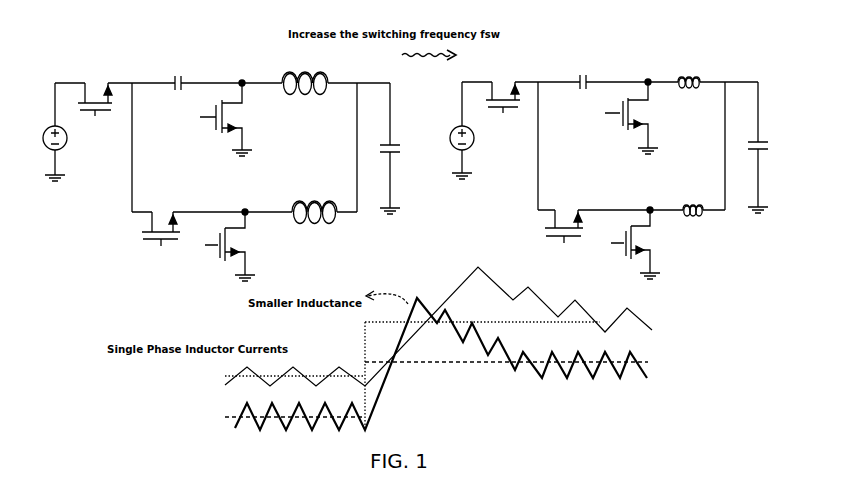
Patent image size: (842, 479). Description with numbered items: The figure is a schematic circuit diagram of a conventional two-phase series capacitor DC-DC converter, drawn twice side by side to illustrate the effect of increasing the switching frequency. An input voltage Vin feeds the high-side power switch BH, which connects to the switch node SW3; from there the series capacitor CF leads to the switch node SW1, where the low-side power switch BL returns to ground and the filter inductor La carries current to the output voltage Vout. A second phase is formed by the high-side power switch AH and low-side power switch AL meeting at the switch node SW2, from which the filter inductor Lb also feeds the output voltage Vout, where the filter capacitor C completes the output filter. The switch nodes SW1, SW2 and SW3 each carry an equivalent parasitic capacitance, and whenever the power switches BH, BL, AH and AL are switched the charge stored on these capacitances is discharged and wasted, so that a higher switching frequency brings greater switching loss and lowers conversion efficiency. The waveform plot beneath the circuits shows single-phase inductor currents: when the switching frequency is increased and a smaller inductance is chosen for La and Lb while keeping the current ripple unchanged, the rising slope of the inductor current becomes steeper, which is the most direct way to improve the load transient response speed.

The input voltage Vin is at (255, 131).
The power switch BH is at (299, 110).
The switch node SW3 is at (335, 138).
The series capacitor CF is at (380, 72).
The switch node SW1 is at (444, 75).
The power switch BL is at (420, 119).
The filter inductor La is at (491, 75).
The output voltage Vout is at (545, 74).
The filter capacitor C is at (582, 148).
The power switch AH is at (362, 237).
The switch node SW2 is at (448, 203).
The power switch AL is at (424, 245).
The filter inductor Lb is at (497, 205).